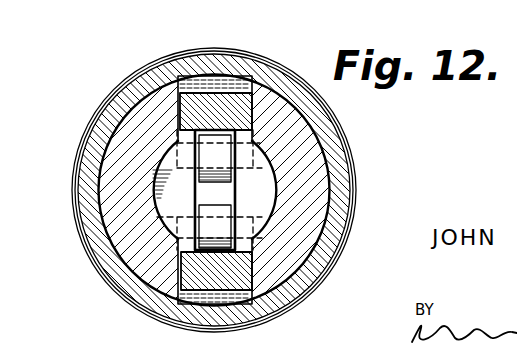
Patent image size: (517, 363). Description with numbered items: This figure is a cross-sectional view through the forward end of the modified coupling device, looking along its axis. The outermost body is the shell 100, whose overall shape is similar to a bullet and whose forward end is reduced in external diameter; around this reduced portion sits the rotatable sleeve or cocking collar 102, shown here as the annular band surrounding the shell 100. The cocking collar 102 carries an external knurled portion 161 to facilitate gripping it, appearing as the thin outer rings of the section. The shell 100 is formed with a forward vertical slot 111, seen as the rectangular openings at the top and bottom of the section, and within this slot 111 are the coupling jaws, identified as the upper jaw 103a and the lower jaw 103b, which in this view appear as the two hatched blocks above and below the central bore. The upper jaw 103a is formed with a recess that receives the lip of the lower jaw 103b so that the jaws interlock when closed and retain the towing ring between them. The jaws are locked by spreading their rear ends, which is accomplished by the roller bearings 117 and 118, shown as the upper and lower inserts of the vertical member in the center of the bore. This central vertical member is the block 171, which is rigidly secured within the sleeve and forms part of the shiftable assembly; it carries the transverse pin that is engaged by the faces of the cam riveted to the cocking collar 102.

The shell 100 is at (110, 153).
The cocking collar 102 is at (266, 77).
The upper jaw 103a is at (190, 110).
The lower jaw 103b is at (251, 277).
The forward vertical slot 111 is at (202, 82).
The roller bearing 117 is at (228, 153).
The roller bearing 118 is at (200, 224).
The knurled portion 161 is at (273, 313).
The block 171 is at (268, 191).